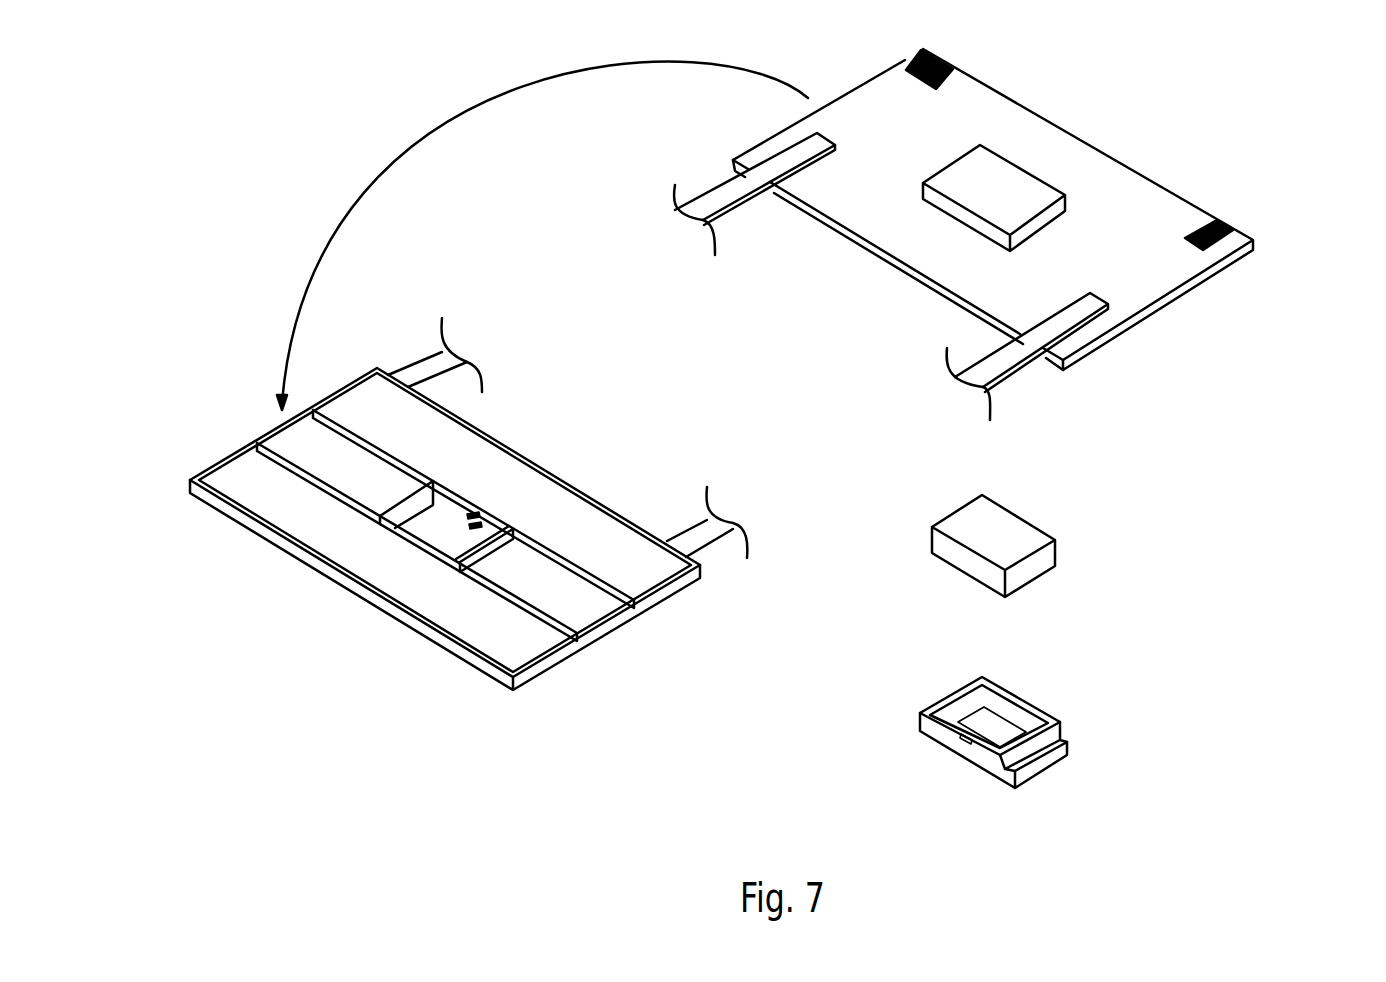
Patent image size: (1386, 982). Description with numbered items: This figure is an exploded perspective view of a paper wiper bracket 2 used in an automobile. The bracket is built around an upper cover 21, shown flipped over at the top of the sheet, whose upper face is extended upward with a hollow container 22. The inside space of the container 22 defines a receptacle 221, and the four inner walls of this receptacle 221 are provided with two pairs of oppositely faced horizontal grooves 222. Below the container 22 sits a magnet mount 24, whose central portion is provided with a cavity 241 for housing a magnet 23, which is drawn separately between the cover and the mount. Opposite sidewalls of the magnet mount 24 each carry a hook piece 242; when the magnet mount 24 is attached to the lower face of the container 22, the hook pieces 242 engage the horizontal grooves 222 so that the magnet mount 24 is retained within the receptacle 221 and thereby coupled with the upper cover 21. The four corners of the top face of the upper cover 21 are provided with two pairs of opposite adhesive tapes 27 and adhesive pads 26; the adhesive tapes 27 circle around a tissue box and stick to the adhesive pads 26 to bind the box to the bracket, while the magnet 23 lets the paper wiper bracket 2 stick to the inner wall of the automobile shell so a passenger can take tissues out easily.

The paper wiper bracket 2 is at (587, 645).
The upper cover 21 is at (1152, 212).
The container 22 is at (973, 175).
The receptacle 221 is at (447, 538).
The horizontal grooves 222 is at (478, 512).
The magnet 23 is at (1043, 562).
The magnet mount 24 is at (1026, 727).
The cavity 241 is at (987, 722).
The hook piece 242 is at (962, 740).
The adhesive pads 26 is at (917, 73).
The adhesive tapes 27 is at (727, 203).